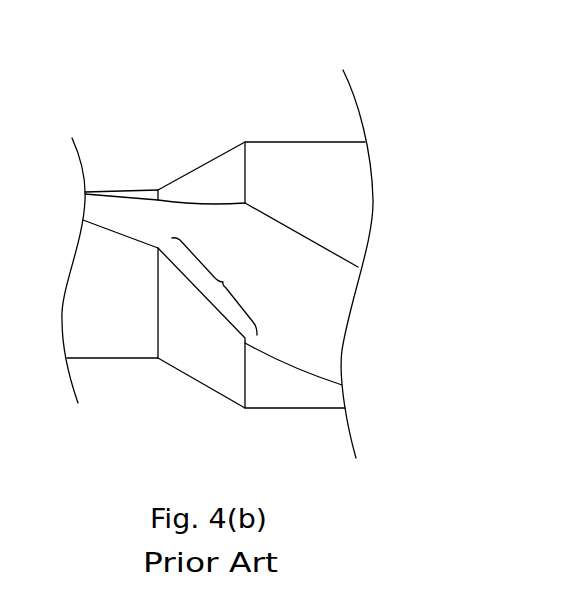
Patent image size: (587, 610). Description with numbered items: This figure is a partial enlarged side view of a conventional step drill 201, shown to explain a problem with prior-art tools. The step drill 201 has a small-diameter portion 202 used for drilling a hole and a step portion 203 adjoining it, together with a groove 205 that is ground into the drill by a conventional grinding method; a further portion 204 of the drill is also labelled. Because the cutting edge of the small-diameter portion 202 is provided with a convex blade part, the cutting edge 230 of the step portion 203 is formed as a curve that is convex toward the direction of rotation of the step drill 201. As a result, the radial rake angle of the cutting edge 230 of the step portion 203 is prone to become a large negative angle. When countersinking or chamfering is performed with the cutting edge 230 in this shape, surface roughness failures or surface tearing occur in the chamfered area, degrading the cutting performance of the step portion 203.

The step drill 201 is at (440, 108).
The small-diameter portion 202 is at (115, 347).
The step portion 203 is at (205, 372).
The third tooth portion 204 is at (298, 395).
The groove 205 is at (327, 313).
The cutting edge 230 is at (215, 286).